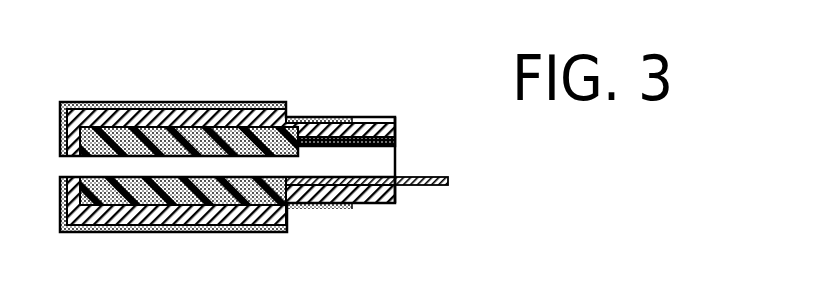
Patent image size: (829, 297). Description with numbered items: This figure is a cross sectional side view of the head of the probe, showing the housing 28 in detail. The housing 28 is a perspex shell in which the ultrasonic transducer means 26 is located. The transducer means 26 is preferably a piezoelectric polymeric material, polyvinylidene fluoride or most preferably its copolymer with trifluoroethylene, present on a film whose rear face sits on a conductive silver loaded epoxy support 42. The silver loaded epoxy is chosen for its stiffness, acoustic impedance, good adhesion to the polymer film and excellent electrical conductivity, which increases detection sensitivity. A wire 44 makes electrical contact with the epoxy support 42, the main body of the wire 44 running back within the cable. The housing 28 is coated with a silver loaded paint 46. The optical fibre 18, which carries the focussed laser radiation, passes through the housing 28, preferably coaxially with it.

The housing 28 is at (65, 93).
The ultrasonic transducer means 26 is at (80, 128).
The conductive silver loaded epoxy support 42 is at (168, 135).
The silver loaded paint 46 is at (130, 233).
The optical fibre 18 is at (395, 157).
The wire 44 is at (437, 176).